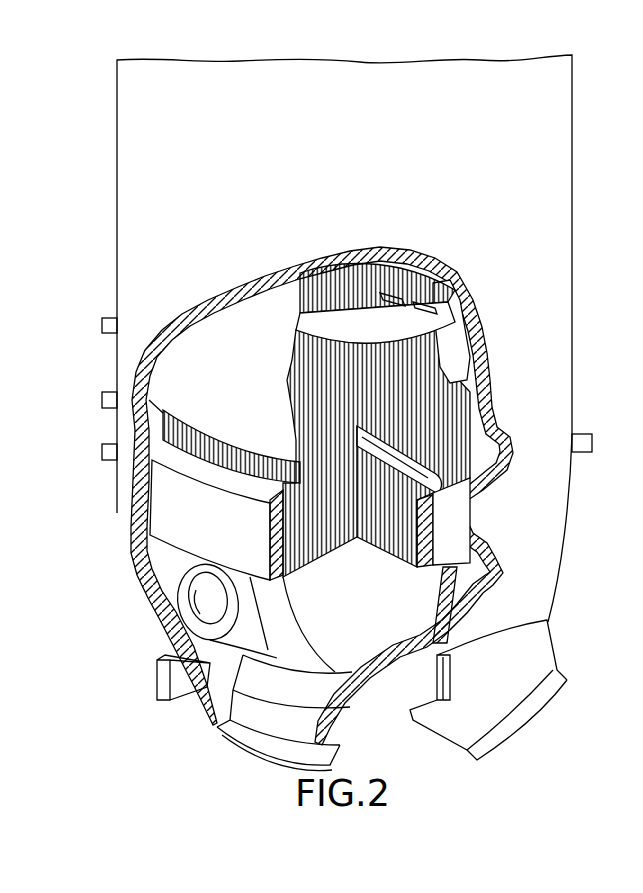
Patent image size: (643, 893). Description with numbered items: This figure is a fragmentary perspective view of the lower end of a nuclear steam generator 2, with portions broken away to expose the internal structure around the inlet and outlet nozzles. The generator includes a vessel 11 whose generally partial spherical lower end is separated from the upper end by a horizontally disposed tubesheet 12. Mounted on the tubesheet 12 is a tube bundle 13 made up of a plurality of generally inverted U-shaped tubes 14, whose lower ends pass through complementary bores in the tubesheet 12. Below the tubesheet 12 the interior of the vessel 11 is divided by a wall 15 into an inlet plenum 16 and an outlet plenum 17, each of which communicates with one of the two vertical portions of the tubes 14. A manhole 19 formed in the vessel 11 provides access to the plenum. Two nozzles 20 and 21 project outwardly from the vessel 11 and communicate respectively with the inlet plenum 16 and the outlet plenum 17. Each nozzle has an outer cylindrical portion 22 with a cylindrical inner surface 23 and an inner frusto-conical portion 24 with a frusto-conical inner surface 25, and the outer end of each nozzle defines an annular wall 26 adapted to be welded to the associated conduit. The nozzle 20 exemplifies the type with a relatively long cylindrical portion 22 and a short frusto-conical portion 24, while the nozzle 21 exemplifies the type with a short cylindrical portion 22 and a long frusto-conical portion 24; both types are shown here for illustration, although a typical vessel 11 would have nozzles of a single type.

The nuclear steam generator 2 is at (102, 188).
The vessel 11 is at (577, 257).
The tubesheet 12 is at (168, 498).
The tube bundle 13 is at (322, 367).
The tubes 14 is at (340, 404).
The wall 15 is at (478, 600).
The inlet plenum 16 is at (306, 641).
The outlet plenum 17 is at (472, 568).
The manhole 19 is at (200, 587).
The nozzle 20 is at (209, 726).
The nozzle 21 is at (560, 640).
The outer cylindrical portion 22 is at (523, 733).
The cylindrical inner surface 23 is at (279, 741).
The inner frusto-conical portion 24 is at (296, 660).
The frusto-conical inner surface 25 is at (272, 701).
The annular wall 26 is at (243, 748).